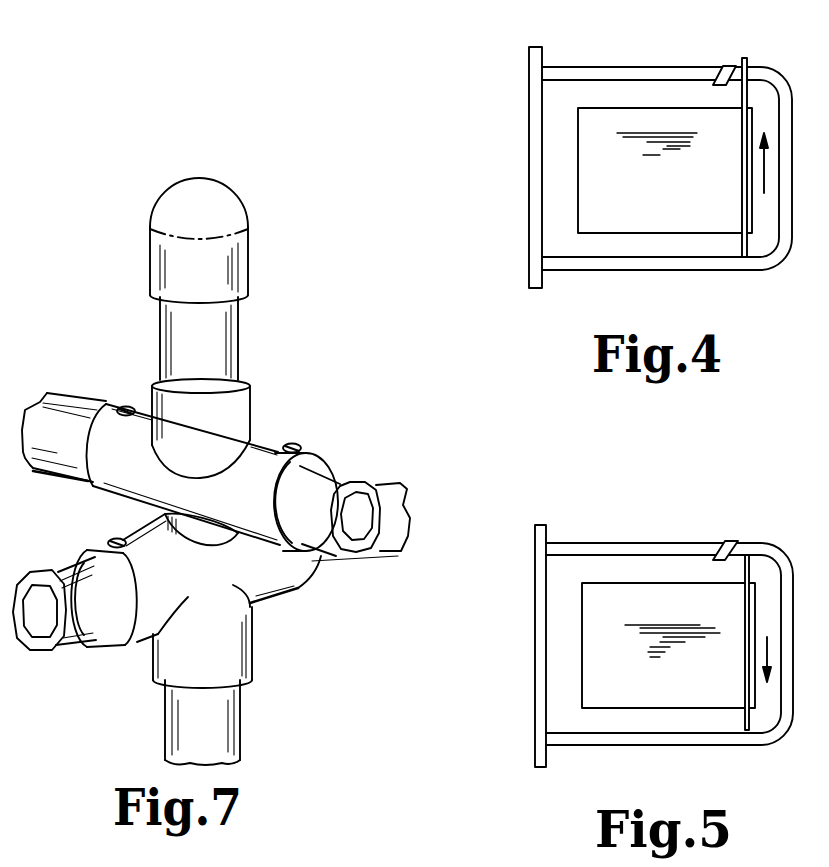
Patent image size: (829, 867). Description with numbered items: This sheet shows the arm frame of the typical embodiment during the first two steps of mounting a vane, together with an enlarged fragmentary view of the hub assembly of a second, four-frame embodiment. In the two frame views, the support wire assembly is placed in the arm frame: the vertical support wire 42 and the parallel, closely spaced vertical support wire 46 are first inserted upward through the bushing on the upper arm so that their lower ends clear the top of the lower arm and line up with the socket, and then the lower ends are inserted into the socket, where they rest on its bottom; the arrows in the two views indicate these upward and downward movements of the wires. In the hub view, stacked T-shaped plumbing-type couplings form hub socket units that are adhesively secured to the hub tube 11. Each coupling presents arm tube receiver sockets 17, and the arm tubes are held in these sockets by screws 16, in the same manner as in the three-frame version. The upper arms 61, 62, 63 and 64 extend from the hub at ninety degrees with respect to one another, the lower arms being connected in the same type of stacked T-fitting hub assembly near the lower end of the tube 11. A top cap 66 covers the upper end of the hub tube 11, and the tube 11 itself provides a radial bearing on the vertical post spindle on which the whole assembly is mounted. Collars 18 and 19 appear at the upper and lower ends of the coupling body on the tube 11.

In FIG. 7, the hub tube 11 is at (239, 331).
In FIG. 4, the hub tube 11 is at (530, 142).
In FIG. 7, the screws 16 is at (126, 405).
In FIG. 7, the arm tube receiver sockets 17 is at (255, 443).
In FIG. 7, the upper collar 18 is at (250, 397).
In FIG. 7, the lower collar 19 is at (253, 655).
In FIG. 4, the vertical support wire 42 is at (745, 242).
In FIG. 4, the vertical support wire 46 is at (752, 243).
In FIG. 7, the upper arm 61 is at (63, 401).
In FIG. 7, the upper arm 62 is at (333, 542).
In FIG. 7, the upper arm 63 is at (398, 551).
In FIG. 7, the upper arm 64 is at (70, 647).
In FIG. 7, the top cap 66 is at (243, 205).